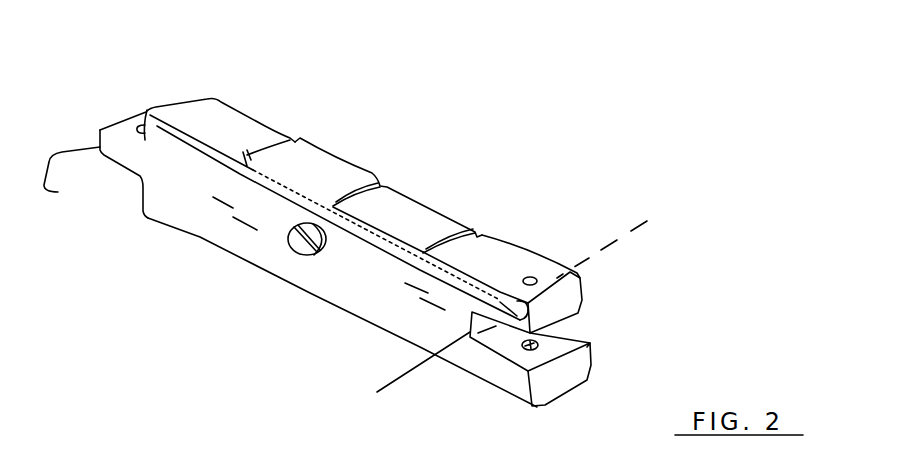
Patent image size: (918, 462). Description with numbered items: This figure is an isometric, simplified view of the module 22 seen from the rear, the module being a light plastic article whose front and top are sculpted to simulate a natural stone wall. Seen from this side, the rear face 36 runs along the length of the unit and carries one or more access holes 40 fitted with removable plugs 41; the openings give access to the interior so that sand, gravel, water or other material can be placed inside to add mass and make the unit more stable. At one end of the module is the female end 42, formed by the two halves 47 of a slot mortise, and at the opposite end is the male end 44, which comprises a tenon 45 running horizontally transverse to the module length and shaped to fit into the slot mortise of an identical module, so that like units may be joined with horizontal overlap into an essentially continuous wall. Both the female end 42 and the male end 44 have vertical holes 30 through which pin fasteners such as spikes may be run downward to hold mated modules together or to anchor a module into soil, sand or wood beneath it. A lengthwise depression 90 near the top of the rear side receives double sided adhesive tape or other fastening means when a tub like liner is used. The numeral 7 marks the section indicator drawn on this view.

The module 22 is at (395, 182).
The vertical holes 30 is at (145, 112).
The rear face 36 is at (188, 205).
The access holes 40 is at (307, 256).
The removable plugs 41 is at (289, 234).
The female end 42 is at (461, 379).
The male end 44 is at (186, 77).
The tenon 45 is at (96, 187).
The two halves of the slot mortise 47 is at (583, 291).
The lengthwise depression 90 is at (262, 190).
The section line 7- 7 is at (658, 213).